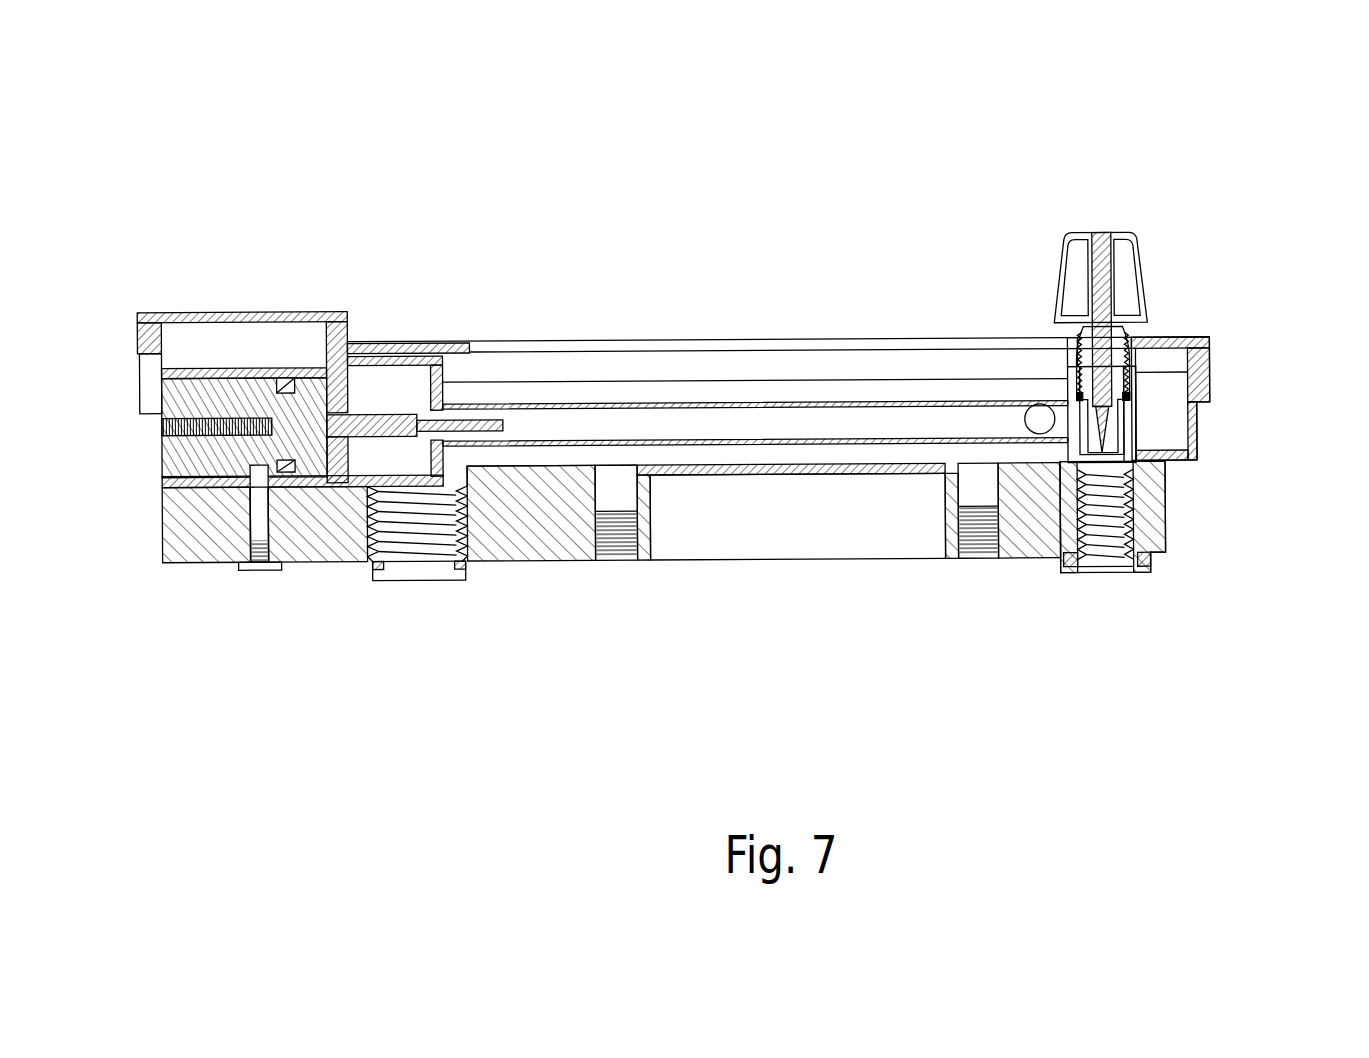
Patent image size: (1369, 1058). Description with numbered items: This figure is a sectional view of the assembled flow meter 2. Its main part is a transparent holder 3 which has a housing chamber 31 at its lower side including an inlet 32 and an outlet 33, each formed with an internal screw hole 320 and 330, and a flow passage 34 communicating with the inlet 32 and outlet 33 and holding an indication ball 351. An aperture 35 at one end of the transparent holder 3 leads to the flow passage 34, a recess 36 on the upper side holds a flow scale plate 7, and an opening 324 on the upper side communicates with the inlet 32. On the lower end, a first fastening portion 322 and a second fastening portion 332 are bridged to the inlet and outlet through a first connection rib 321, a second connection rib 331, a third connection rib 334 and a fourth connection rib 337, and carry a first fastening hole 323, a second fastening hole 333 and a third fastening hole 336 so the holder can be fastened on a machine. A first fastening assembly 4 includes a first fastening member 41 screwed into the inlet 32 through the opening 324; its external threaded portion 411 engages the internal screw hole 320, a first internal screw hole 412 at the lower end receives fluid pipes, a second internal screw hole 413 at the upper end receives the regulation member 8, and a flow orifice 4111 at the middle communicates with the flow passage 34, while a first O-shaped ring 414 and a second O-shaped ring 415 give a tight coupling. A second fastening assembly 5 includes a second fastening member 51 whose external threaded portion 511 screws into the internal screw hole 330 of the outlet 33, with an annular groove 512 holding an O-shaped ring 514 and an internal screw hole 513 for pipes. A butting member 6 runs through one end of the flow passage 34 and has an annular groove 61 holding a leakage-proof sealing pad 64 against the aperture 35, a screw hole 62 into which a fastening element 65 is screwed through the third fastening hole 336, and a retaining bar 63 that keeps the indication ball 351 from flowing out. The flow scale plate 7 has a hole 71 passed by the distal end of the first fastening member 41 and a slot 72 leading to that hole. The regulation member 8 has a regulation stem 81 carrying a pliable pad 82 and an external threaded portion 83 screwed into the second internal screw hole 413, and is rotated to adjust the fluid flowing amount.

The flow meter 2 is at (676, 253).
The transparent holder 3 is at (1195, 446).
The first fastening assembly 4 is at (1095, 579).
The second fastening assembly 5 is at (435, 581).
The butting member 6 is at (215, 397).
The flow scale plate 7 is at (840, 342).
The regulation member 8 is at (1150, 239).
The housing chamber 31 is at (788, 554).
The inlet 32 is at (1163, 568).
The outlet 33 is at (466, 561).
The flow passage 34 is at (749, 438).
The aperture 35 is at (163, 397).
The recess 36 is at (1211, 352).
The first fastening member 41 is at (1150, 506).
The second fastening member 51 is at (362, 519).
The annular groove 61 is at (349, 326).
The screw hole 62 is at (248, 466).
The retaining bar 63 is at (447, 413).
The leakage-proof sealing pad 64 is at (280, 375).
The fastening element 65 is at (267, 568).
The hole 71 is at (1080, 361).
The slot 72 is at (903, 349).
The regulation stem 81 is at (1098, 394).
The pliable pad 82 is at (1131, 411).
The external threaded portion 83 is at (1193, 323).
The first connection rib 321 is at (1027, 548).
The first fastening portion 322 is at (949, 526).
The first fastening hole 323 is at (967, 550).
The opening 324 is at (1134, 395).
The second connection rib 331 is at (512, 540).
The second fastening portion 332 is at (641, 541).
The second fastening hole 333 is at (607, 551).
The third connection rib 334 is at (300, 545).
The third fastening hole 336 is at (243, 567).
The fourth connection rib 337 is at (177, 559).
The indication ball 351 is at (1038, 418).
The external threaded portion 411 is at (1199, 513).
The first internal screw hole 412 is at (1103, 562).
The first O-shaped ring 414 is at (1151, 561).
The second O-shaped ring 415 is at (1128, 399).
The external threaded portion 511 is at (550, 375).
The internal screw hole 513 is at (413, 557).
The O-shaped ring 514 is at (401, 613).
The flow orifice 4111 is at (1068, 372).
The internal screw hole 330 is at (464, 478).
The second internal screw hole 413 is at (1141, 352).
The internal screw hole 320 is at (1148, 542).
The annular groove 512 is at (372, 546).